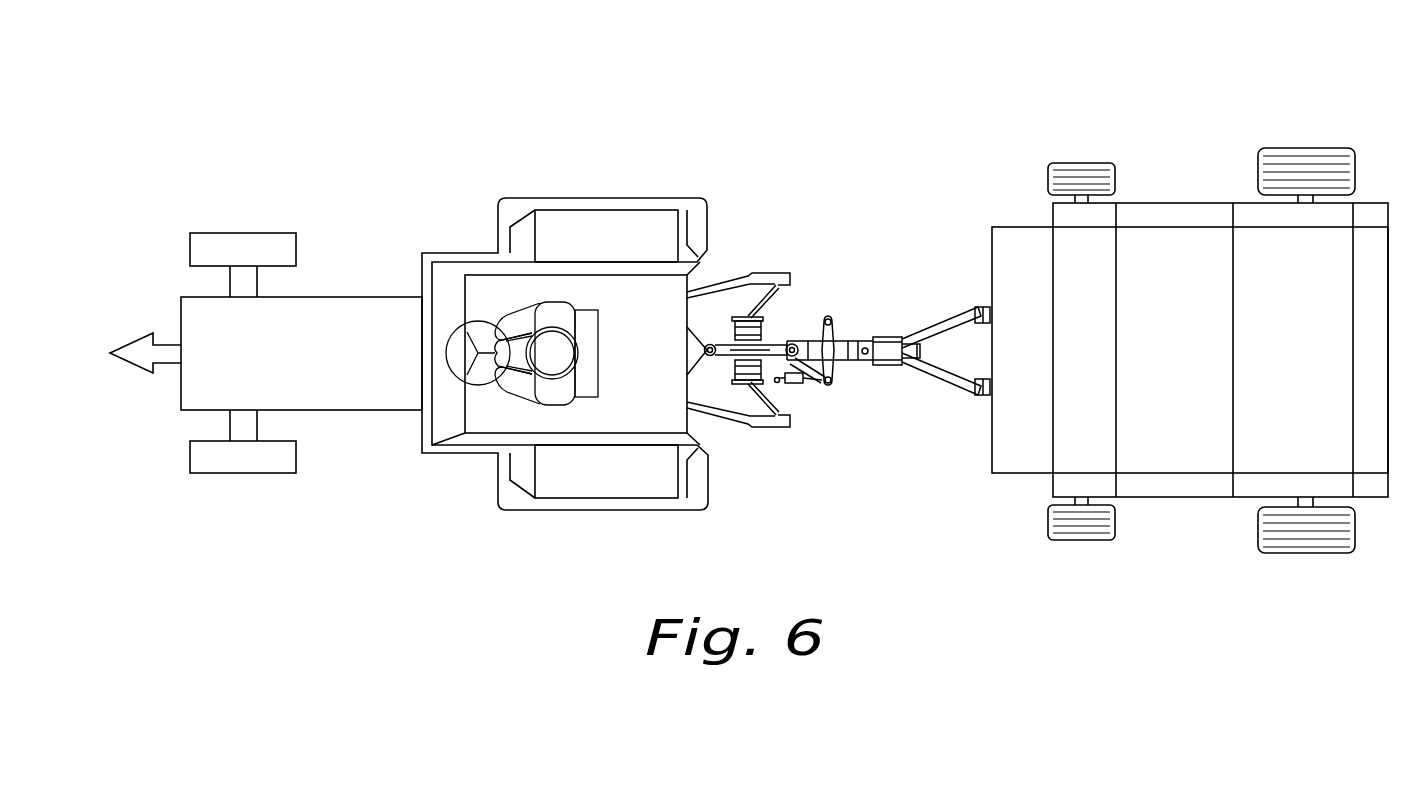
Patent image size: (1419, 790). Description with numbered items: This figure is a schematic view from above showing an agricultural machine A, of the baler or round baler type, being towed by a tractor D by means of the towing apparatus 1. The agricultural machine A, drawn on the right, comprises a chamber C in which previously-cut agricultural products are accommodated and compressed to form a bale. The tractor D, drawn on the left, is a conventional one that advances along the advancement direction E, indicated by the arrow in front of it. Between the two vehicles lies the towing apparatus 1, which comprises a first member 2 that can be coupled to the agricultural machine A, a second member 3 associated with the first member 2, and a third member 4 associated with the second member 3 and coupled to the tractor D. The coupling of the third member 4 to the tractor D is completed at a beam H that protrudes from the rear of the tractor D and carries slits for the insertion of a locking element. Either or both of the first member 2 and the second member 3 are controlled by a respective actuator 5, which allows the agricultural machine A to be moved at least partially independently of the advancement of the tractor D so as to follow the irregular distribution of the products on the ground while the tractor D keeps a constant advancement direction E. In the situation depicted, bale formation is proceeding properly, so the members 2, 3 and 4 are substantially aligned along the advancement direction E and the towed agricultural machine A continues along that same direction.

The towing apparatus 1 is at (887, 314).
The first member 2 is at (942, 314).
The second member 3 is at (813, 333).
The third member 4 is at (742, 318).
The actuator 5 is at (790, 372).
The beam H is at (758, 278).
The agricultural machine A is at (1190, 312).
The chamber C is at (1195, 263).
The tractor D is at (597, 177).
The advancement direction E is at (162, 363).